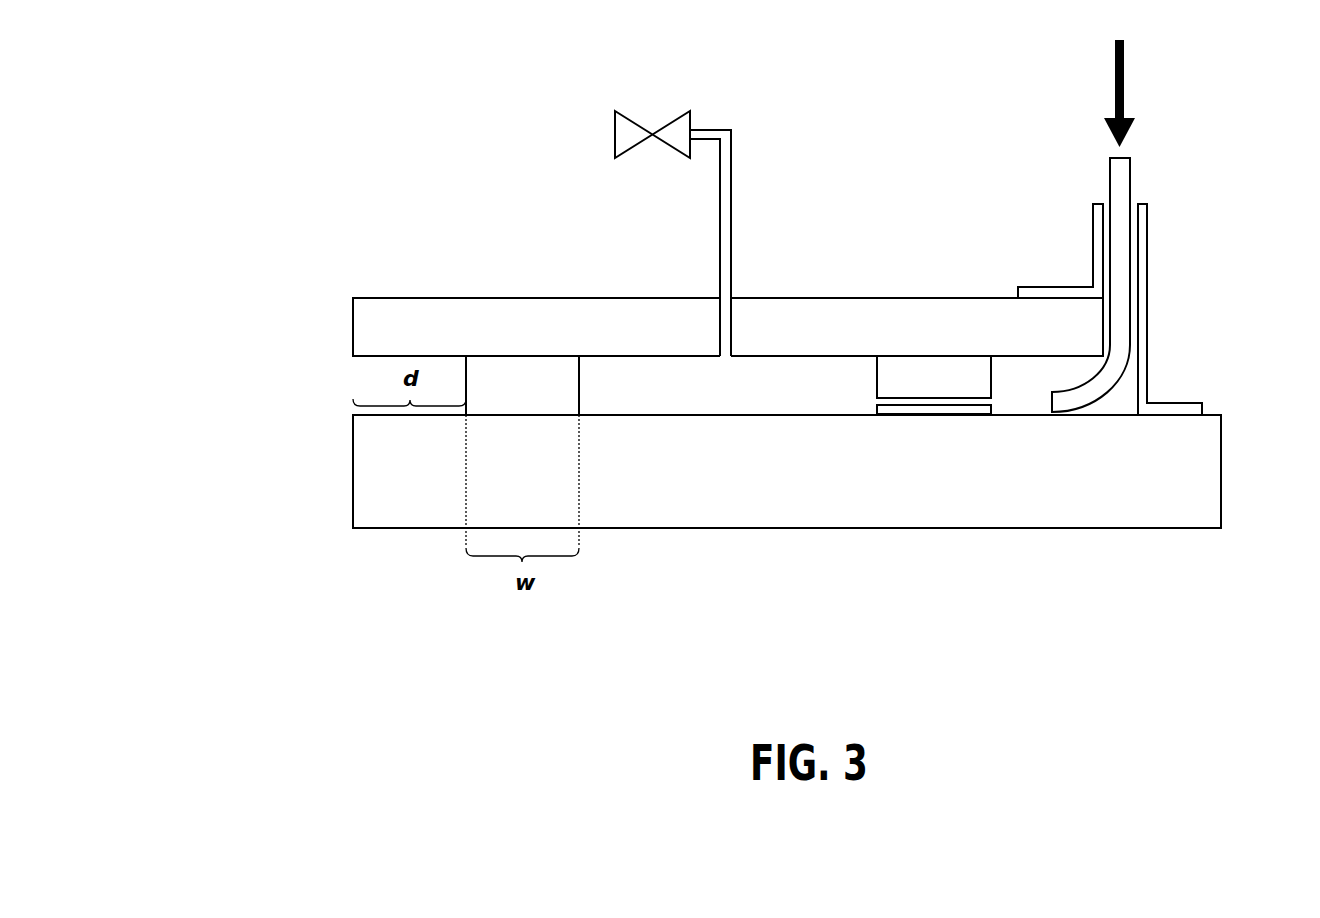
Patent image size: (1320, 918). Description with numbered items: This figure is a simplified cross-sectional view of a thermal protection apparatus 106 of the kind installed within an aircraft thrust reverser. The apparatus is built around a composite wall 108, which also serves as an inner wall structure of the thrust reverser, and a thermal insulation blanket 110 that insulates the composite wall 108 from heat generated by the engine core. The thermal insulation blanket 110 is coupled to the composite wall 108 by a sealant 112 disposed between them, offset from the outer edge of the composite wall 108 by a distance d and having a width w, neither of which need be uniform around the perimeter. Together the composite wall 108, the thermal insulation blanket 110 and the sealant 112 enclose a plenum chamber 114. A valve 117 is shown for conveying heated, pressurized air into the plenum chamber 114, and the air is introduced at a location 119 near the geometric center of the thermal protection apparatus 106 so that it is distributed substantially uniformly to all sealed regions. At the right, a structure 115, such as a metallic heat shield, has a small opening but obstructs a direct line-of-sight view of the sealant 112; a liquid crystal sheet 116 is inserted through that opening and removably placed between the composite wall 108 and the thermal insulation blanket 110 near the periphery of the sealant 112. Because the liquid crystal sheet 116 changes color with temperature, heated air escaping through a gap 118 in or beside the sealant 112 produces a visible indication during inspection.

The thermal protection apparatus 106 is at (240, 184).
The composite wall 108 is at (794, 513).
The thermal insulation blanket 110 is at (583, 315).
The sealant 112 is at (503, 375).
The plenum chamber 114 is at (746, 397).
The structure 115 is at (1098, 252).
The liquid crystal sheet 116 is at (1122, 187).
The valve 117 is at (674, 128).
The gap 118 is at (933, 403).
The location 119 is at (748, 283).